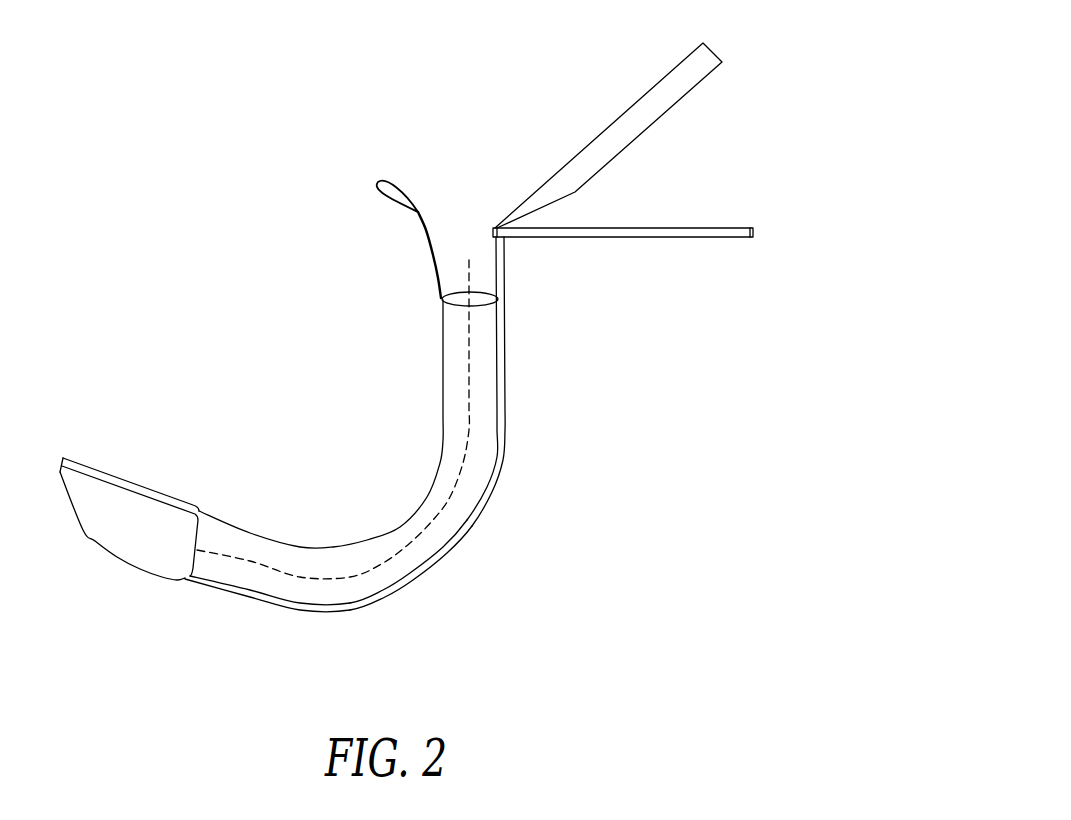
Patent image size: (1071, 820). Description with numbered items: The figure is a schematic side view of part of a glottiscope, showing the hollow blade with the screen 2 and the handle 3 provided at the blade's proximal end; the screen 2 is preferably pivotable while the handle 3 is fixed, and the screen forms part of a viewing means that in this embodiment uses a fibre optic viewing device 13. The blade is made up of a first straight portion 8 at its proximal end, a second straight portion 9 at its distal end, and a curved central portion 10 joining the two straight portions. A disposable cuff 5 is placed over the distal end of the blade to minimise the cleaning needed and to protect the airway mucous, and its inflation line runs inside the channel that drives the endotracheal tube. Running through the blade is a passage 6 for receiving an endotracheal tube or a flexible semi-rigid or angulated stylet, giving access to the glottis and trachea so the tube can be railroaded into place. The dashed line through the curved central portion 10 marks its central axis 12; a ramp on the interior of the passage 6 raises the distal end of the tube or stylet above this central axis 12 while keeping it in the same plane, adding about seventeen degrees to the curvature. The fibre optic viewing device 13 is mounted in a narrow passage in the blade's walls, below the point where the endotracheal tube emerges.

The screen 2 is at (710, 60).
The handle 3 is at (757, 233).
The disposable cuff 5 is at (132, 510).
The passage 6 is at (438, 537).
The first straight portion 8 is at (512, 361).
The second straight portion 9 is at (258, 607).
The curved central portion 10 is at (497, 490).
The central axis 12 is at (470, 325).
The fibre optic viewing device 13 is at (377, 602).